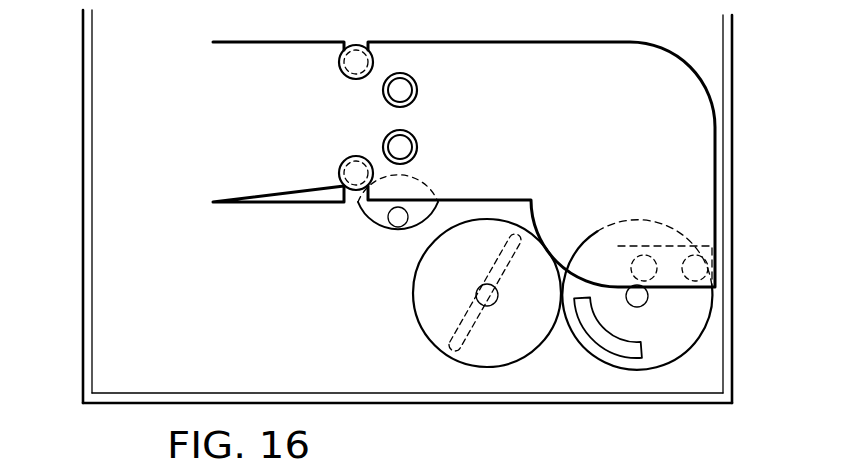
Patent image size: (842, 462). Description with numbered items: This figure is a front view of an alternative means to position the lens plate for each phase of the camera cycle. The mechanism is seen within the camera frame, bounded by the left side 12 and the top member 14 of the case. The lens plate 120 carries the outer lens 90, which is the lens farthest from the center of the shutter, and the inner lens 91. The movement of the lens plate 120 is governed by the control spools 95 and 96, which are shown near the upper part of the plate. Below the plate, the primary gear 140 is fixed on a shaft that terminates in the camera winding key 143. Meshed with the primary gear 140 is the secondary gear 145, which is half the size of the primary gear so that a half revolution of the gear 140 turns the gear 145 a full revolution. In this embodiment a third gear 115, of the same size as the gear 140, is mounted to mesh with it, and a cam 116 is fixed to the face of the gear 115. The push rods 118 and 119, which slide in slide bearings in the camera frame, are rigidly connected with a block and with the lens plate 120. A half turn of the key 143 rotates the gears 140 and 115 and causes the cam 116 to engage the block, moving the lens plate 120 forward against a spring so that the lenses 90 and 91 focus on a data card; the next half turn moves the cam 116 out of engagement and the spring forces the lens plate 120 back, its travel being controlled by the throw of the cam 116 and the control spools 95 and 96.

The left side 12 is at (212, 398).
The top member 14 is at (88, 258).
The outer lens 90 is at (401, 87).
The inner lens 91 is at (403, 144).
The control spool 95 is at (356, 58).
The control spool 96 is at (354, 171).
The third gear 115 is at (685, 316).
The cam 116 is at (613, 345).
The push rod 118 is at (645, 268).
The push rod 119 is at (695, 272).
The lens plate 120 is at (572, 90).
The primary gear 140 is at (443, 315).
The camera winding key 143 is at (477, 317).
The secondary gear 145 is at (383, 235).